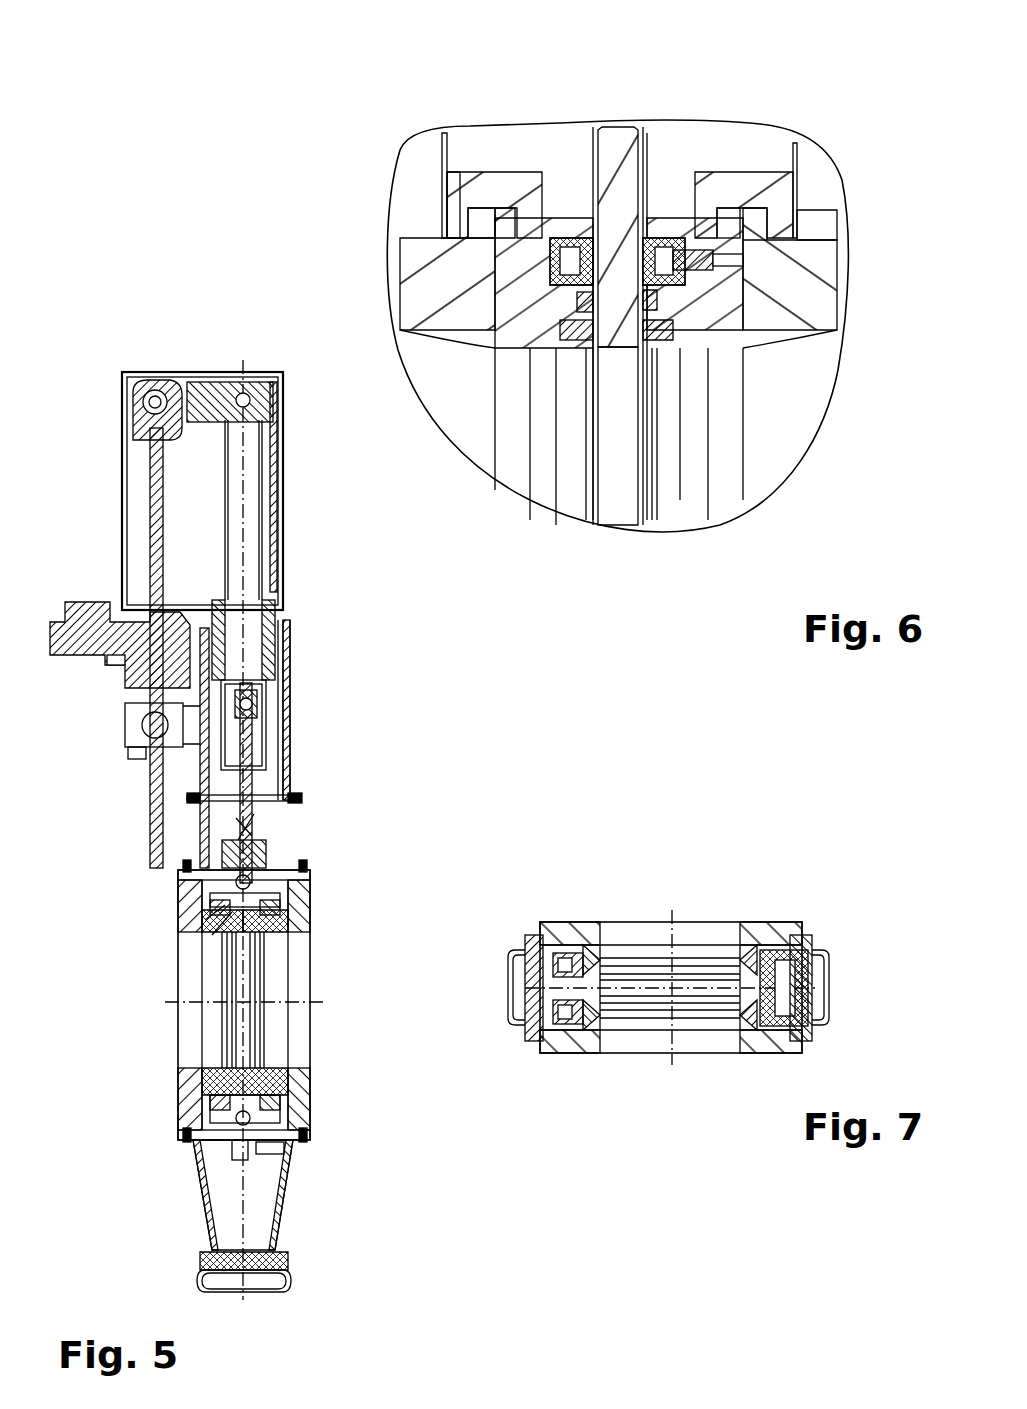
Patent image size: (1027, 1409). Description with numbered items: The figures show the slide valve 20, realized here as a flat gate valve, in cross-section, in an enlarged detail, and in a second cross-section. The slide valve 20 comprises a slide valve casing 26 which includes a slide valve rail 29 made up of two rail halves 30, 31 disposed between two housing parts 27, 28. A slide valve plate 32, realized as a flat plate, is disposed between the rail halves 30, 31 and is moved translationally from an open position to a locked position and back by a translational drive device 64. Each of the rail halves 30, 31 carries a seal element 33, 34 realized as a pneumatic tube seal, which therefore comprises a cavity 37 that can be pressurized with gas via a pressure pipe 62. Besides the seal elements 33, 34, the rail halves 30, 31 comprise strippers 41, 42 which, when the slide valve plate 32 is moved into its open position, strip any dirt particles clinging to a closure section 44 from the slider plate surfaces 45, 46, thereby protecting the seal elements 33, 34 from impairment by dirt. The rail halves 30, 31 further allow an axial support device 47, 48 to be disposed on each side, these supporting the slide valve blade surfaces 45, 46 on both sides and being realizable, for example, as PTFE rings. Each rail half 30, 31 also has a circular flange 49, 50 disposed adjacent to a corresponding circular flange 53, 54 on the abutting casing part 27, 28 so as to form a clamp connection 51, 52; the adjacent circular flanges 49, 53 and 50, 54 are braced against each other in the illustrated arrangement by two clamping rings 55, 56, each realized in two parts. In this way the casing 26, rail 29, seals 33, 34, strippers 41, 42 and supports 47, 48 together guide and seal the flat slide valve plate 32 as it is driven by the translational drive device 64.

In FIG. 5, the slide valve 20 is at (303, 775).
In FIG. 7, the slide valve 20 is at (733, 922).
In FIG. 5, the slide valve casing 26 is at (186, 1092).
In FIG. 7, the slide valve casing 26 is at (568, 916).
In FIG. 5, the housing part 27 is at (178, 900).
In FIG. 6, the housing part 27 is at (418, 283).
In FIG. 5, the housing part 28 is at (300, 1080).
In FIG. 6, the housing part 28 is at (810, 297).
In FIG. 5, the slide valve rail 29 is at (282, 1062).
In FIG. 6, the slide valve rail 29 is at (735, 430).
In FIG. 6, the rail half 30 is at (556, 178).
In FIG. 6, the rail half 31 is at (700, 178).
In FIG. 5, the slide valve plate 32 is at (250, 775).
In FIG. 6, the slide valve plate 32 is at (618, 520).
In FIG. 7, the slide valve plate 32 is at (812, 938).
In FIG. 5, the seal element 33 is at (215, 920).
In FIG. 6, the seal element 33 is at (586, 168).
In FIG. 5, the seal element 34 is at (275, 920).
In FIG. 6, the seal element 34 is at (664, 182).
In FIG. 6, the cavity 37 is at (565, 320).
In FIG. 6, the stripper 41 is at (597, 363).
In FIG. 6, the stripper 42 is at (643, 363).
In FIG. 5, the closure section 44 is at (233, 800).
In FIG. 5, the slider plate surface 45 is at (238, 830).
In FIG. 6, the slider plate surface 45 is at (597, 140).
In FIG. 5, the slider plate surface 46 is at (258, 826).
In FIG. 6, the slider plate surface 46 is at (648, 135).
In FIG. 6, the axial support device 47 is at (586, 363).
In FIG. 6, the axial support device 48 is at (683, 363).
In FIG. 6, the circular flange 49 is at (520, 172).
In FIG. 6, the circular flange 50 is at (766, 170).
In FIG. 6, the clamp connection 51 is at (476, 170).
In FIG. 6, the clamp connection 52 is at (760, 180).
In FIG. 6, the circular flange 53 is at (505, 222).
In FIG. 6, the circular flange 54 is at (740, 210).
In FIG. 6, the clamping ring 55 is at (480, 228).
In FIG. 6, the clamping ring 56 is at (780, 195).
In FIG. 6, the pressure pipe 62 is at (730, 260).
In FIG. 5, the translational drive device 64 is at (275, 455).